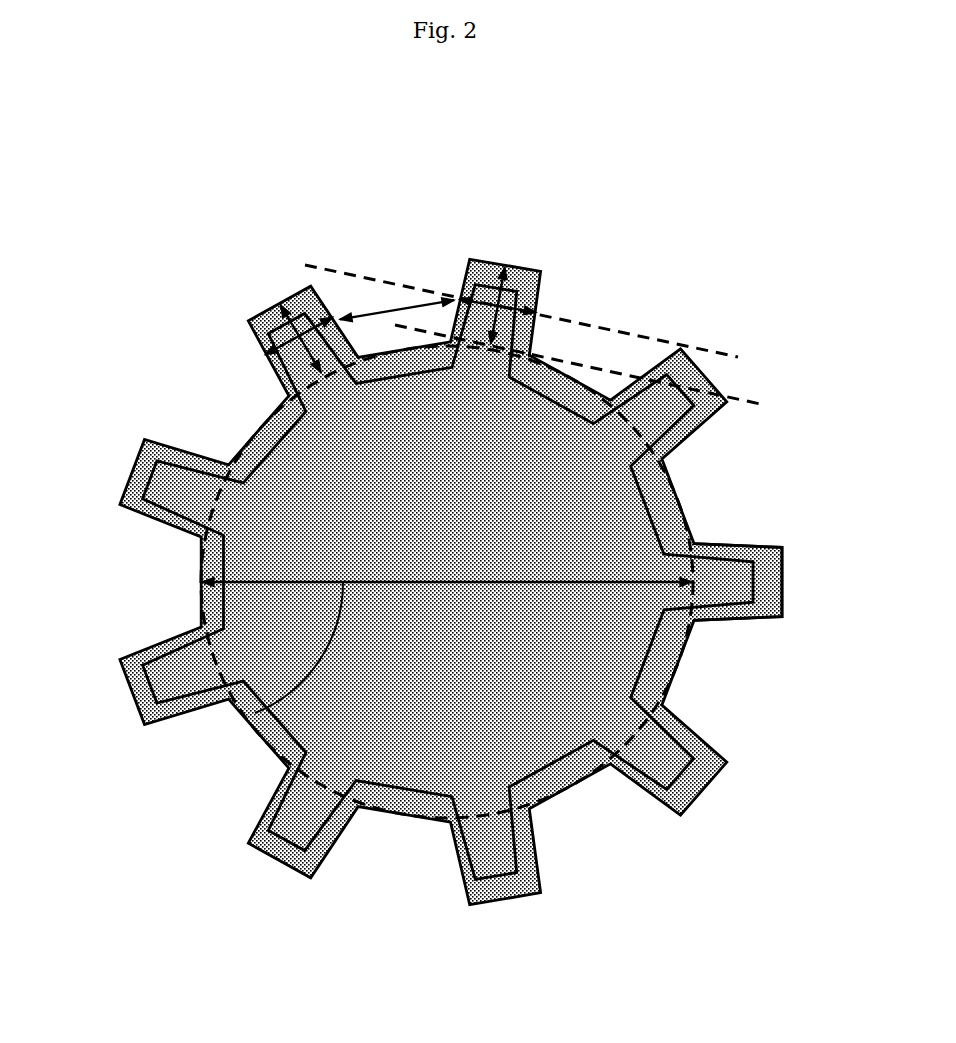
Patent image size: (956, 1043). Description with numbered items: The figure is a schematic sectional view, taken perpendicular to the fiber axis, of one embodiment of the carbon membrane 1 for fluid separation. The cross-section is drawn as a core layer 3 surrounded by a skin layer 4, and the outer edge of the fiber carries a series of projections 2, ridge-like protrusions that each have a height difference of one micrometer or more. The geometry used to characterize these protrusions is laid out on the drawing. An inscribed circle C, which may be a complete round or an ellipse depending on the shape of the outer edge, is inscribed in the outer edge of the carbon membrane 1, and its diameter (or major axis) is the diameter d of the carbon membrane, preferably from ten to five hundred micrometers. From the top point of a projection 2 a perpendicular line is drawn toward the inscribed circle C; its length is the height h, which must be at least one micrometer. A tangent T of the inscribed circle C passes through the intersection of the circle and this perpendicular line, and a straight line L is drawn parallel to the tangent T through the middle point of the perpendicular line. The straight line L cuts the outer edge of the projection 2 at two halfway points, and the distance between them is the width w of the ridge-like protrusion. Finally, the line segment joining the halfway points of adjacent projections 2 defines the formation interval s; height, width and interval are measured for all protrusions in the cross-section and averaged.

The carbon membrane 1 is at (434, 498).
The projection 2 is at (262, 378).
The core layer 3 is at (303, 505).
The skin layer 4 is at (713, 550).
The formation interval s is at (398, 283).
The width of ridge-like protrusion w is at (312, 300).
The height of projection h is at (262, 302).
The straight line L is at (531, 317).
The tangent T is at (590, 372).
The inscribed circle C is at (688, 650).
The diameter of carbon membrane d is at (250, 712).